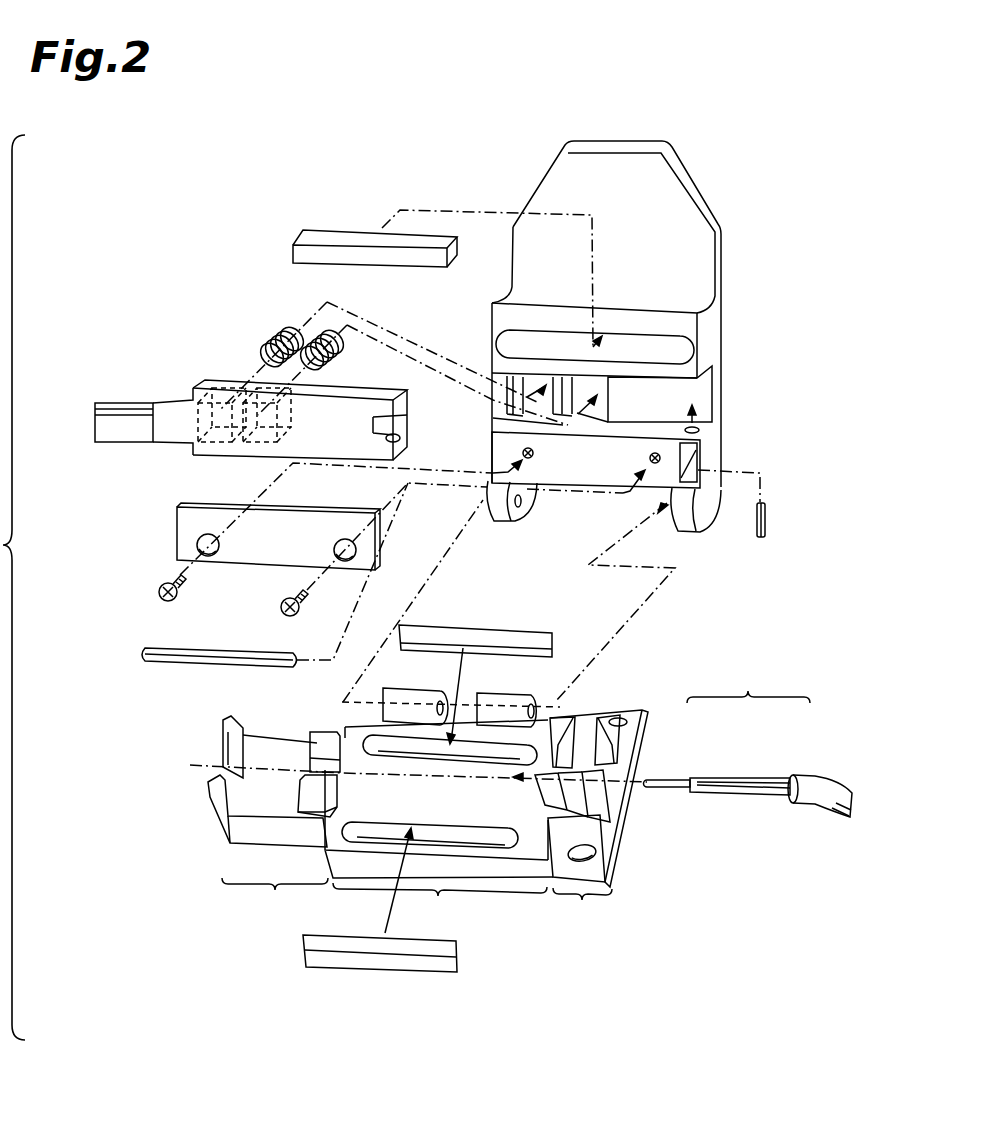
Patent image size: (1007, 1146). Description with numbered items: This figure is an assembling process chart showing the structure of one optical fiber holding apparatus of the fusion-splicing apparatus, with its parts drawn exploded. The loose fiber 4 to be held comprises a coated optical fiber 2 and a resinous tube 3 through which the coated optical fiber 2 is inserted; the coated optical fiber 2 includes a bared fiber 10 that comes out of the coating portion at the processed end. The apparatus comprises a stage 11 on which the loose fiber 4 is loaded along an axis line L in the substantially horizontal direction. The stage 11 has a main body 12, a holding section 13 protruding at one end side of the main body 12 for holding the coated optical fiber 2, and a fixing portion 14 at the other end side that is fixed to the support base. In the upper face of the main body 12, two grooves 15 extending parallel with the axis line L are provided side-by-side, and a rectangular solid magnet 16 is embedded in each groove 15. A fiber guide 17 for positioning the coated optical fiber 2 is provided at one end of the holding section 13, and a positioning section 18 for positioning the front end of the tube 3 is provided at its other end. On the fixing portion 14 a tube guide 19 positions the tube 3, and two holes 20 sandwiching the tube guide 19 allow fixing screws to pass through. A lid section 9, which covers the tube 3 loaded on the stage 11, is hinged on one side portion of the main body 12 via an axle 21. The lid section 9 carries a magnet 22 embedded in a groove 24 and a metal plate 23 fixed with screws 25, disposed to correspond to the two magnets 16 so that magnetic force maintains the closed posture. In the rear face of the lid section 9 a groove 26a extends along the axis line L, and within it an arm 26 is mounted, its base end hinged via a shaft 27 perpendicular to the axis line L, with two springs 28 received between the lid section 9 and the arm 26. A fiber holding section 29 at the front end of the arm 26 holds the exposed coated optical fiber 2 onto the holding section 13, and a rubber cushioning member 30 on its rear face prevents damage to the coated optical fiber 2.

The coated optical fiber 2 is at (750, 777).
The resinous tube 3 is at (807, 773).
The loose fiber 4 is at (748, 742).
The lid section 9 is at (729, 289).
The bared fiber 10 is at (673, 777).
The stage 11 is at (630, 834).
The main body 12 is at (440, 906).
The holding section 13 is at (268, 832).
The fixing portion 14 is at (598, 822).
The grooves 15 is at (545, 748).
The magnet 16 is at (507, 623).
The fiber guide 17 is at (227, 725).
The positioning section 18 is at (327, 737).
The tube guide 19 is at (613, 795).
The holes 20 is at (624, 721).
The axle 21 is at (155, 650).
The magnet 22 is at (360, 233).
The metal plate 23 is at (183, 532).
The groove 24 is at (685, 350).
The screws 25 is at (160, 588).
The arm 26 is at (352, 412).
The groove 26a is at (704, 388).
The shaft 27 is at (759, 538).
The springs 28 is at (263, 344).
The fiber holding section 29 is at (135, 400).
The cushioning member 30 is at (105, 425).
The axis line L is at (406, 766).